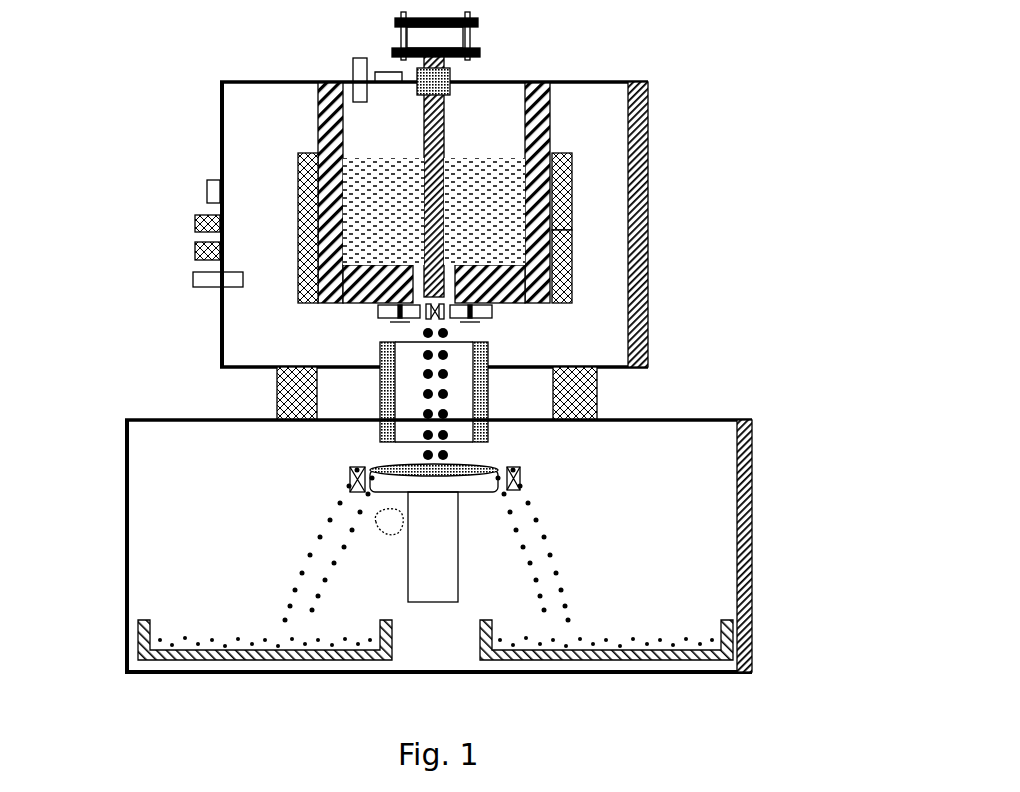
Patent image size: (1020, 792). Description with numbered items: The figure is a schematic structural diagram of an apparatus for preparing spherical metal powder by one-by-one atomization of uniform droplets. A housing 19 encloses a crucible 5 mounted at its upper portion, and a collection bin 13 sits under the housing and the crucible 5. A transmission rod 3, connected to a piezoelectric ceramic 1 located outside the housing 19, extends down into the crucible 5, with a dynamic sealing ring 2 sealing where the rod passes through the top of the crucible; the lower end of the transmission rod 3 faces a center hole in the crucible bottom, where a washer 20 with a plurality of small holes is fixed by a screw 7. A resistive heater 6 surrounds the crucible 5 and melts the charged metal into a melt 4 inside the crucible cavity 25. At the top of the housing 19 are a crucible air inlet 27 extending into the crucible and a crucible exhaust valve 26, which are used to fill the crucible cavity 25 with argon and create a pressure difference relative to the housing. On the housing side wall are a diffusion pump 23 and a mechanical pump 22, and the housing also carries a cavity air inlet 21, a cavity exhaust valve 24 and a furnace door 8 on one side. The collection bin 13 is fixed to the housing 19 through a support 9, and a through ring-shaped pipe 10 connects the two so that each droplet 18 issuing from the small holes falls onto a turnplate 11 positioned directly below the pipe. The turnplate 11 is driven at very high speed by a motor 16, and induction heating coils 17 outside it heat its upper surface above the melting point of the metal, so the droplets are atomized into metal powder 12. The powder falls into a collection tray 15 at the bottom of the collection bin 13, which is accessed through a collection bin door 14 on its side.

The piezoelectric ceramic 1 is at (480, 30).
The dynamic sealing ring 2 is at (450, 72).
The transmission rod 3 is at (447, 118).
The melt 4 is at (460, 178).
The crucible 5 is at (572, 213).
The resistive heater 6 is at (572, 267).
The screw 7 is at (492, 315).
The furnace door 8 is at (648, 348).
The support 9 is at (575, 392).
The ring-shaped pipe 10 is at (490, 422).
The turnplate 11 is at (522, 473).
The metal powder 12 is at (568, 525).
The collection bin 13 is at (655, 582).
The collection bin door 14 is at (752, 642).
The collection tray 15 is at (138, 640).
The motor 16 is at (400, 518).
The induction heating coil 17 is at (350, 478).
The droplet 18 is at (425, 427).
The housing 19 is at (220, 347).
The washer with a plurality of small holes 20 is at (378, 315).
The cavity air inlet 21 is at (193, 280).
The mechanical pump 22 is at (195, 252).
The diffusion pump 23 is at (195, 223).
The cavity exhaust valve 24 is at (207, 192).
The crucible cavity 25 is at (363, 153).
The crucible exhaust valve 26 is at (353, 72).
The crucible air inlet 27 is at (352, 58).